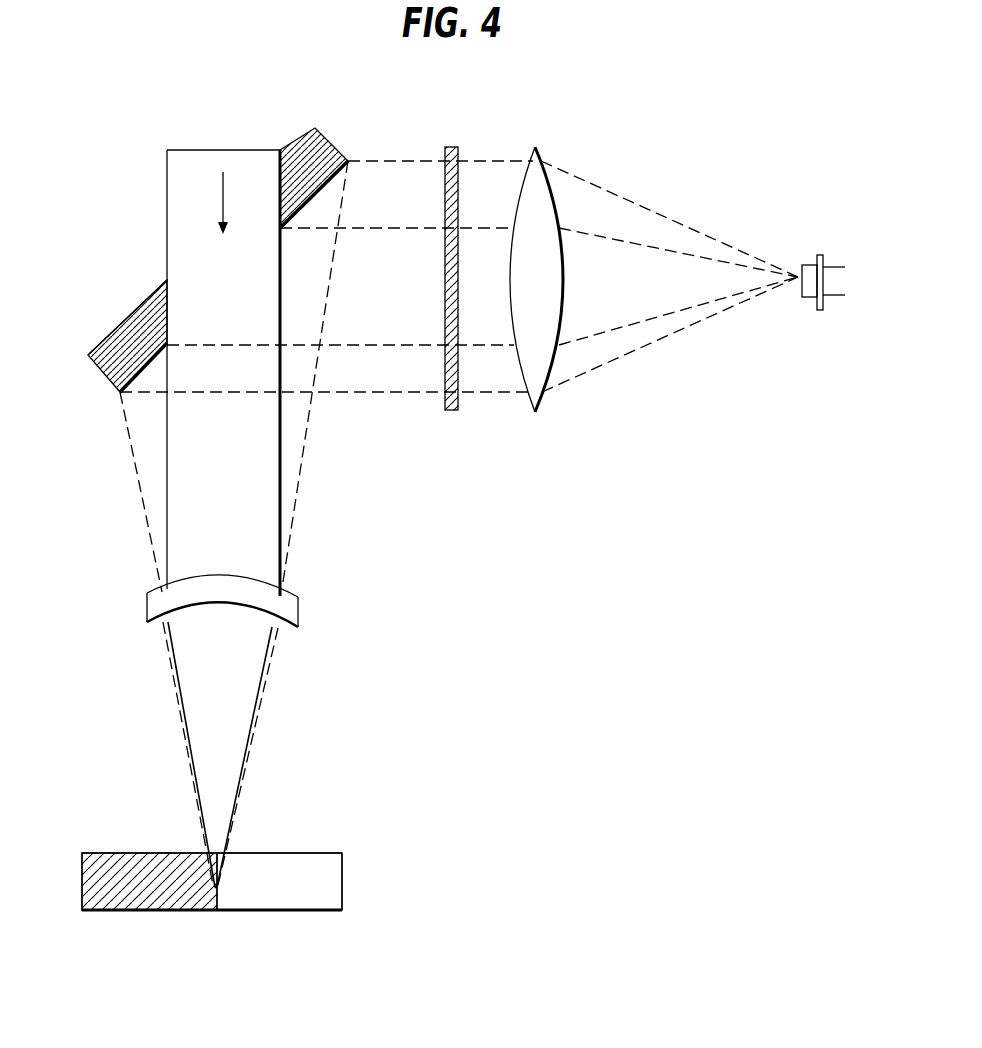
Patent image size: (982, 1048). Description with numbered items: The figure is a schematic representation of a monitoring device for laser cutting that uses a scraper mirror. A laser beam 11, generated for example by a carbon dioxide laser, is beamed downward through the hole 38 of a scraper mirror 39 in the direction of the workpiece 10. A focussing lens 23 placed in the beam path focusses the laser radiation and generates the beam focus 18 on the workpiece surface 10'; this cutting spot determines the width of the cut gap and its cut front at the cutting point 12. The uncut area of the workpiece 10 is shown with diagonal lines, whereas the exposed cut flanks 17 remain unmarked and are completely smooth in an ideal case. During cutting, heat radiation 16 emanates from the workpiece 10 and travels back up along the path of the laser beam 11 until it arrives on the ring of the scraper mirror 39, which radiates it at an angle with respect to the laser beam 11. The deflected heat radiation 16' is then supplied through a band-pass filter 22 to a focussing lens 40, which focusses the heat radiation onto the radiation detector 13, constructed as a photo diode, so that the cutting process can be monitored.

The workpiece 10 is at (192, 914).
The workpiece surface 10' is at (129, 858).
The laser beam 11 is at (190, 163).
The cutting point 12 is at (222, 915).
The radiation detector 13 is at (808, 262).
The heat radiation 16 is at (219, 524).
The heat radiation 16' is at (459, 300).
The cut flanks 17 is at (300, 897).
The beam focus 18 is at (223, 862).
The band-pass filter 22 is at (448, 146).
The focussing lens 23 is at (282, 603).
The hole 38 is at (167, 280).
The scraper mirror 39 is at (105, 347).
The focussing lens 40 is at (535, 185).